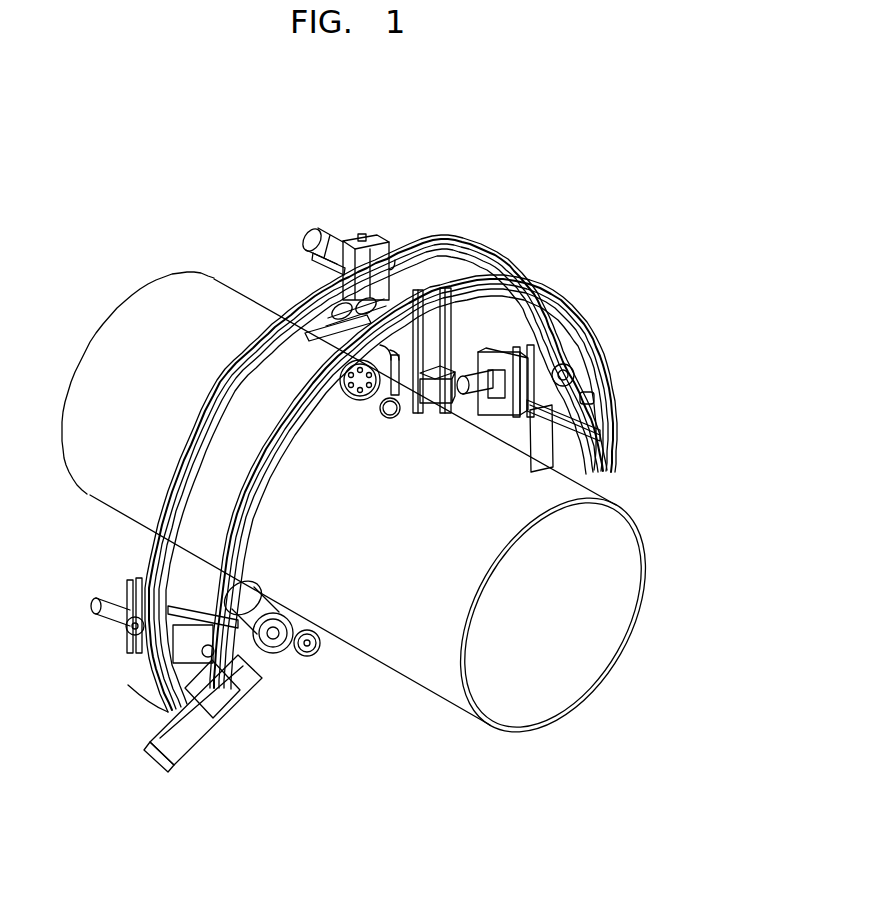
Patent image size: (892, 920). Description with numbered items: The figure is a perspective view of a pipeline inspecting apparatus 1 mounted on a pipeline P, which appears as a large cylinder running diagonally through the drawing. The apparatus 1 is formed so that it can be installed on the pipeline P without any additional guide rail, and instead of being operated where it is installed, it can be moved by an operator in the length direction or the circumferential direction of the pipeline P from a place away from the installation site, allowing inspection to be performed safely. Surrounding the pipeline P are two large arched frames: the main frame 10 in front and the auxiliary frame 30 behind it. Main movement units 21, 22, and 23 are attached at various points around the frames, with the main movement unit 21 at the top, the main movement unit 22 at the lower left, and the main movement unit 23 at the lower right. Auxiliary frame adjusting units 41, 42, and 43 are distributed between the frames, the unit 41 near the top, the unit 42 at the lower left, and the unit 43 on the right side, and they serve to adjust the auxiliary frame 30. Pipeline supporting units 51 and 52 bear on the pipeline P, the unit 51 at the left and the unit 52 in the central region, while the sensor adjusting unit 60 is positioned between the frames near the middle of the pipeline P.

The pipeline inspecting apparatus 1 is at (381, 412).
The main frame 10 is at (430, 236).
The main movement unit 21 is at (353, 226).
The main movement unit 22 is at (247, 712).
The main movement unit 23 is at (560, 463).
The auxiliary frame 30 is at (568, 298).
The auxiliary frame adjusting unit 41 is at (322, 342).
The auxiliary frame adjusting unit 42 is at (172, 658).
The auxiliary frame adjusting unit 43 is at (592, 337).
The pipeline supporting unit 51 is at (135, 567).
The pipeline supporting unit 52 is at (474, 355).
The sensor adjusting unit 60 is at (446, 420).
The pipeline P is at (405, 683).